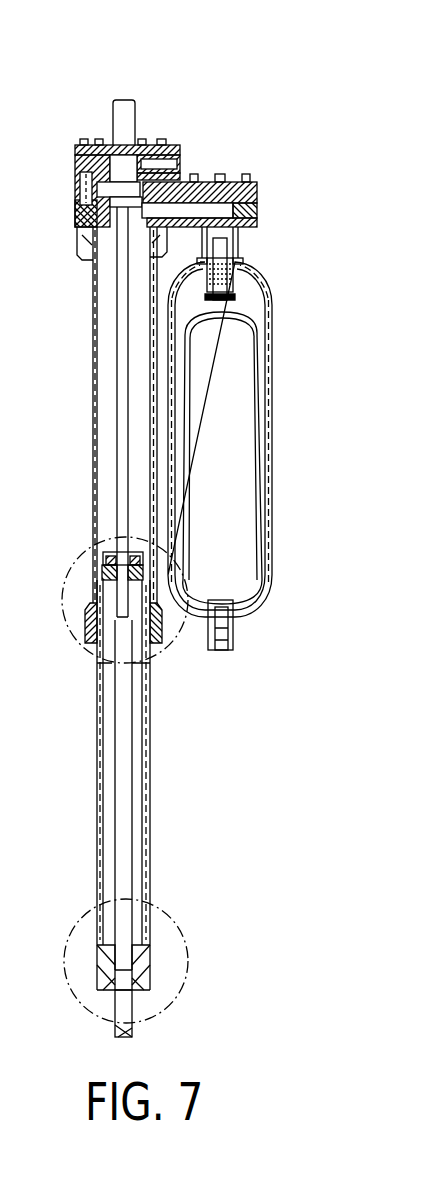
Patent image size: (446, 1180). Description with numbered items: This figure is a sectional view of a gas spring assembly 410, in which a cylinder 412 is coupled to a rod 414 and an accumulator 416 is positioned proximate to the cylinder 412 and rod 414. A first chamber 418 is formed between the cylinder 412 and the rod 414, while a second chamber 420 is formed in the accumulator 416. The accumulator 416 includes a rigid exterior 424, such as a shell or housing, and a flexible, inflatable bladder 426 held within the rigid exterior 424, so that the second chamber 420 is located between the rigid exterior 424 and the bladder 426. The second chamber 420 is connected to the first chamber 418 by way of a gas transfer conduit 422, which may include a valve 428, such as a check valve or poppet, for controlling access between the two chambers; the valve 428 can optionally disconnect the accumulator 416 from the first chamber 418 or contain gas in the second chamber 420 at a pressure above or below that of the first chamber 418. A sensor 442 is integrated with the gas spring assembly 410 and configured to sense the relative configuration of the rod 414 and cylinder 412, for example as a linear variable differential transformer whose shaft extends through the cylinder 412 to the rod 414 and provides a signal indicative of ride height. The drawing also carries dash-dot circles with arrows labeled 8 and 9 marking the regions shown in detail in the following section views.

The gas spring assembly 410 is at (80, 90).
The cylinder 412 is at (93, 352).
The rod 414 is at (97, 787).
The accumulator 416 is at (230, 362).
The first chamber 418 is at (97, 434).
The second chamber 420 is at (252, 307).
The gas transfer conduit 422 is at (190, 210).
The rigid exterior 424 is at (273, 440).
The bladder 426 is at (237, 502).
The valve 428 is at (252, 291).
The sensor 442 is at (123, 302).
The section view 8 indicator 8 is at (84, 537).
The section view 9 indicator 9 is at (82, 911).